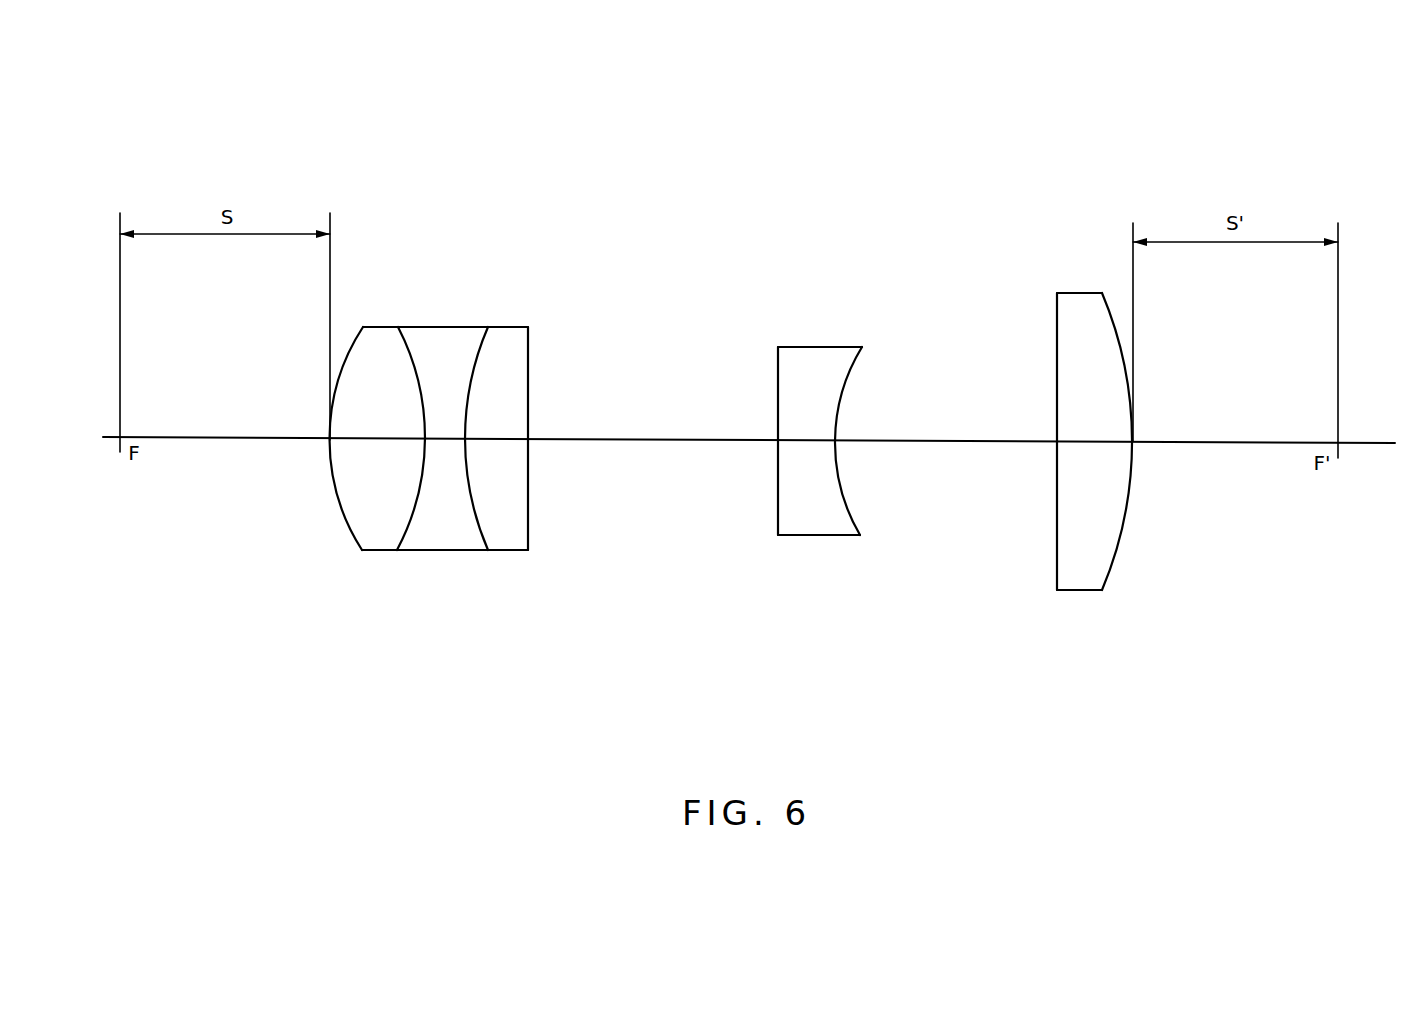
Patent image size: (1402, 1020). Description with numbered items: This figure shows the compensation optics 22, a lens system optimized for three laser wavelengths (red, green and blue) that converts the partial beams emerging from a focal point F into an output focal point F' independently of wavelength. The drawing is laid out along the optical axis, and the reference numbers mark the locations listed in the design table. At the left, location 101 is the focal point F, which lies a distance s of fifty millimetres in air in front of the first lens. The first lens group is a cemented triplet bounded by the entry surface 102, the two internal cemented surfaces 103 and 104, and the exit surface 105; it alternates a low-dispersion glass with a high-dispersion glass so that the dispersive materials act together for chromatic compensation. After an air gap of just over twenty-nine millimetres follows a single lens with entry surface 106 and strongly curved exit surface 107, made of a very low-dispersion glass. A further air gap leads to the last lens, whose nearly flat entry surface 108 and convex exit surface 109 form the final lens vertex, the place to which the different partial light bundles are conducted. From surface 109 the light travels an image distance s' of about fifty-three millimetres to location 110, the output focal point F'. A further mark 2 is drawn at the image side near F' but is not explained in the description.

The optical axis 2 is at (1355, 442).
The compensation optics 22 is at (878, 160).
The location of focal point F 101 is at (118, 440).
The first lens surface location 102 is at (330, 445).
The second lens surface location 103 is at (410, 523).
The third lens surface location 104 is at (478, 523).
The fourth lens surface location 105 is at (530, 487).
The fifth lens surface location 106 is at (778, 483).
The sixth lens surface location 107 is at (840, 483).
The seventh lens surface location 108 is at (1057, 555).
The eighth lens surface location 109 is at (1113, 555).
The location of output focal point F' 110 is at (1340, 453).